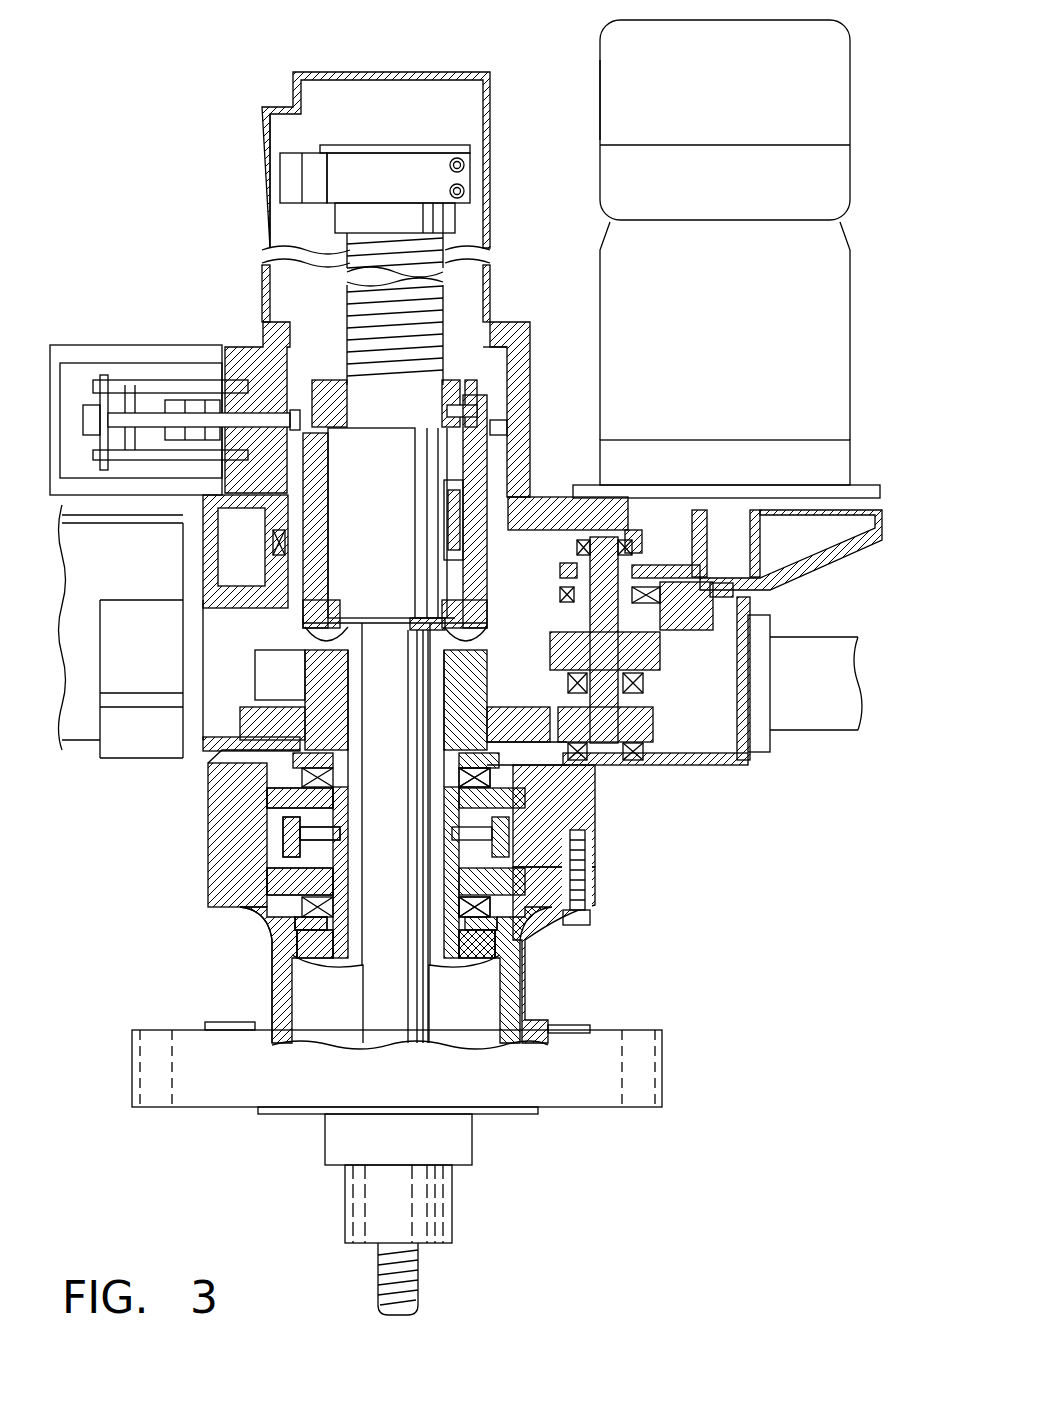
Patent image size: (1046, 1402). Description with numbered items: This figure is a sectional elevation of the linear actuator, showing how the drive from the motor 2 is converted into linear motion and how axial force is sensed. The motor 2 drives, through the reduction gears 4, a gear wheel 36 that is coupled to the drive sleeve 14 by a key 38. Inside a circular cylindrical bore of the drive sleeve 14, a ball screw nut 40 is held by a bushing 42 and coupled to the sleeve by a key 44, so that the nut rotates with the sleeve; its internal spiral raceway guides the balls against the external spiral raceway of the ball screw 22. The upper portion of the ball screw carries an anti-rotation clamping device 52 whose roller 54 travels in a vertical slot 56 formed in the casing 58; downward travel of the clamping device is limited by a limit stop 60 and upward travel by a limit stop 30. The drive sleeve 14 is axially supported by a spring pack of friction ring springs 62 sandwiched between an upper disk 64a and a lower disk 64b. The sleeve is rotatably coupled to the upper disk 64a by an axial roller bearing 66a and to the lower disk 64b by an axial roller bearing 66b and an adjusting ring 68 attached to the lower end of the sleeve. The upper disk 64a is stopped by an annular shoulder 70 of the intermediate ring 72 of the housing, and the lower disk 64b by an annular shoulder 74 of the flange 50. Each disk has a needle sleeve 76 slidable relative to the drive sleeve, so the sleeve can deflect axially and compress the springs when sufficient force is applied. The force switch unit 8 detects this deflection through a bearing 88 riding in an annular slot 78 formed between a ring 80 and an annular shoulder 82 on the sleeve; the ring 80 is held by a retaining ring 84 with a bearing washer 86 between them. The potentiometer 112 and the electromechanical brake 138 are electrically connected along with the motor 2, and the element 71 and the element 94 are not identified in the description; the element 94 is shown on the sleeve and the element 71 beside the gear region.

The motor 2 is at (840, 337).
The reduction gears 4 is at (720, 767).
The force switch unit 8 is at (90, 340).
The drive sleeve 14 is at (310, 617).
The ball screw 22 is at (413, 997).
The limit stop 30 is at (440, 1207).
The gear wheel 36 is at (248, 723).
The key 38 is at (482, 727).
The ball screw nut 40 is at (362, 570).
The bushing 42 is at (340, 400).
The key 44 is at (456, 522).
The flange 50 is at (662, 1045).
The clamping device 52 is at (315, 175).
The roller 54 is at (290, 195).
The vertical slot 56 is at (268, 220).
The casing 58 is at (293, 100).
The limit stop 60 is at (345, 145).
The friction ring springs 62 is at (265, 831).
The upper disk 64a is at (268, 795).
The lower disk 64b is at (267, 887).
The axial roller bearing 66a is at (467, 780).
The axial roller bearing 66b is at (490, 907).
The adjusting ring 68 is at (303, 957).
The annular shoulder 70 is at (592, 827).
The bracket 71 is at (283, 540).
The intermediate ring 72 is at (585, 798).
The annular shoulder 74 is at (267, 918).
The needle sleeve 76 is at (337, 810).
The annular slot 78 is at (510, 430).
The ring 80 is at (470, 410).
The annular shoulder 82 is at (290, 420).
The retaining ring 84 is at (485, 395).
The bearing washer 86 is at (500, 410).
The bearing 88 is at (290, 420).
The tube 94 is at (270, 490).
The potentiometer 112 is at (83, 430).
The electromechanical brake 138 is at (600, 100).